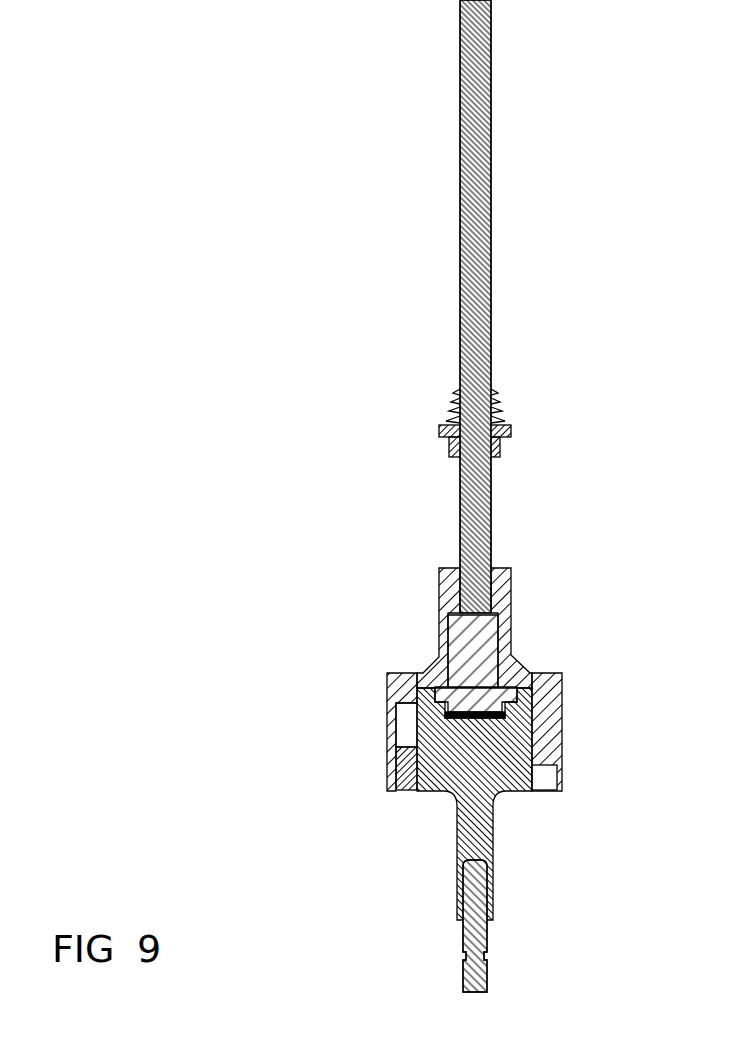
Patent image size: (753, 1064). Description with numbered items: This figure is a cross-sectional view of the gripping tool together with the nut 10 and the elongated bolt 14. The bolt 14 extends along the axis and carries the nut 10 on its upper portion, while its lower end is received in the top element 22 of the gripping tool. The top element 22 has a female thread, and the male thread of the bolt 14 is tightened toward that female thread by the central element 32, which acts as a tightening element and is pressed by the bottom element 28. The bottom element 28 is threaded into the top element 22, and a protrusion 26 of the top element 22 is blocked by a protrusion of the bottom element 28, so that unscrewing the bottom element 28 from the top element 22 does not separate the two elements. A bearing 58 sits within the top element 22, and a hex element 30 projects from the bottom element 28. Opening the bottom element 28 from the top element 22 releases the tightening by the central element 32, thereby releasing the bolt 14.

The nut 10 is at (440, 428).
The elongated bolt 14 is at (460, 533).
The top element of the gripping tool 22 is at (562, 753).
The protrusion of the top element 26 is at (400, 787).
The bottom element of the gripping tool 28 is at (513, 792).
The hex element 30 is at (465, 967).
The central element of the gripping tool 32 is at (500, 623).
The bearing 58 is at (416, 730).